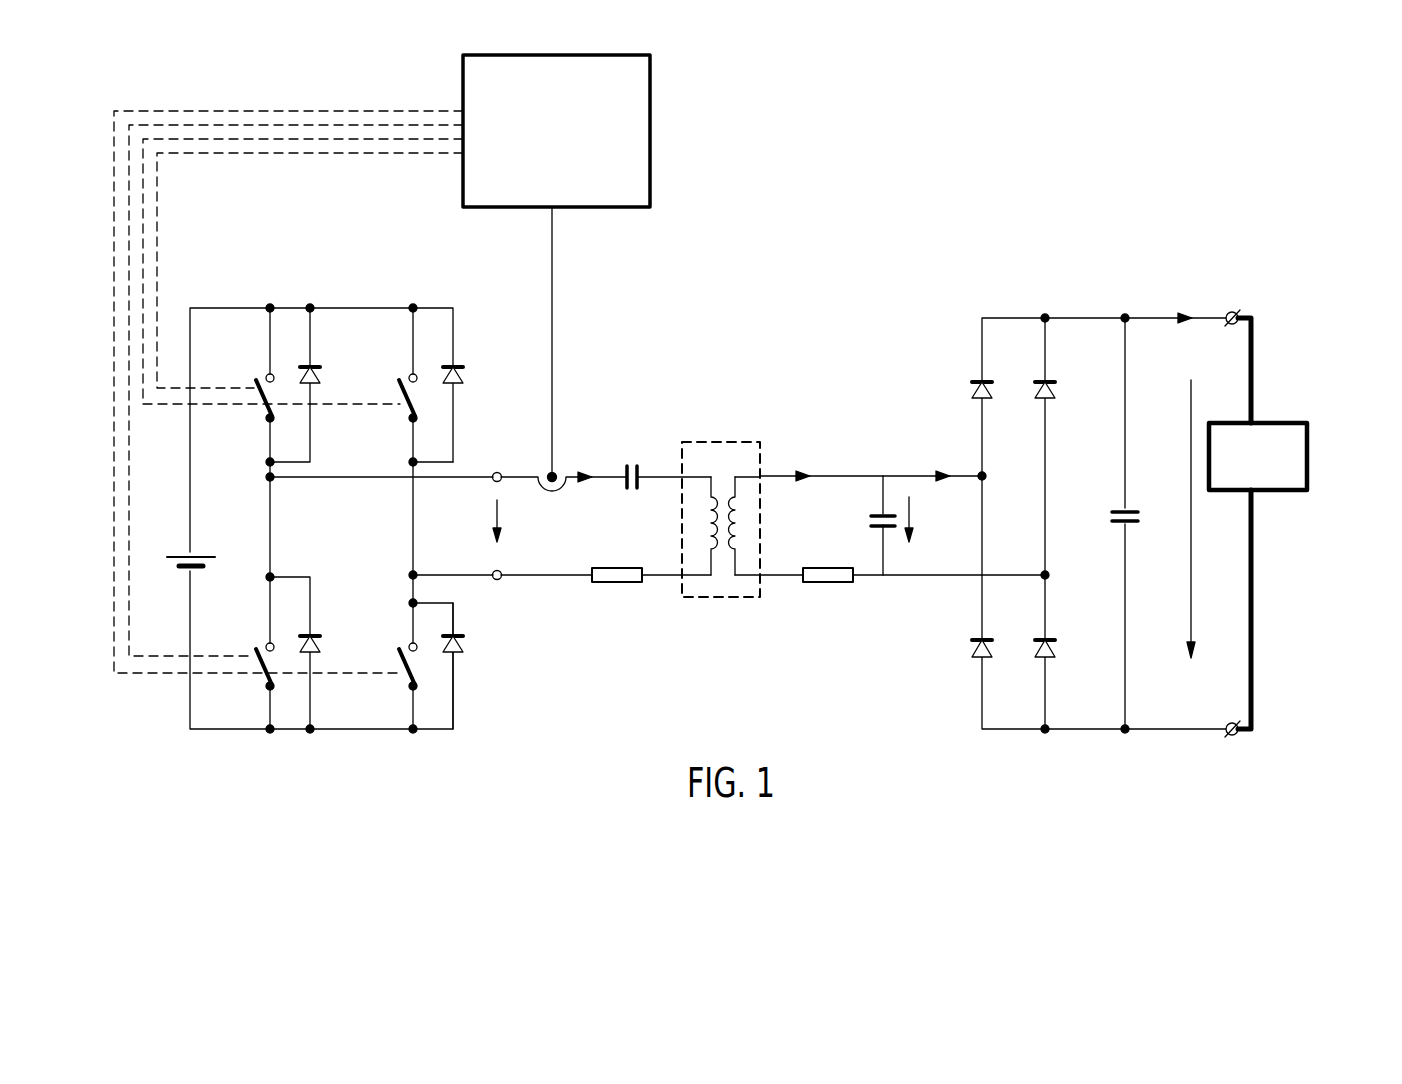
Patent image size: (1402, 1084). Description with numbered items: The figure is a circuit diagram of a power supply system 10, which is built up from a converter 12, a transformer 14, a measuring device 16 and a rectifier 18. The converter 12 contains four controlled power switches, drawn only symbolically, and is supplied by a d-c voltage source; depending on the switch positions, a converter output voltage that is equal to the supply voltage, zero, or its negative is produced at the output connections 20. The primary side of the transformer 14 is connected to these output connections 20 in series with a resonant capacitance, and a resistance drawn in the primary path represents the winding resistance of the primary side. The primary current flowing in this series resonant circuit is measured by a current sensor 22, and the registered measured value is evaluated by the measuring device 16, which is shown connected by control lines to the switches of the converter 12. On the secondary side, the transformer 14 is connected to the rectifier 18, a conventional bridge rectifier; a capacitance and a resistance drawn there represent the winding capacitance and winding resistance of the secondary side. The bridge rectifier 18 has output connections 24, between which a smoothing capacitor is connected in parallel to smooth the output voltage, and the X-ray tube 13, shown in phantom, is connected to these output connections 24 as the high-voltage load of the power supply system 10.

The power supply system 10 is at (1132, 142).
The converter 12 is at (458, 740).
The X-ray tube 13 is at (1292, 422).
The transformer 14 is at (722, 598).
The measuring device 16 is at (566, 140).
The rectifier 18 is at (1055, 737).
The output connections 20 is at (497, 468).
The current sensor 22 is at (553, 475).
The output connections 24 is at (1250, 325).